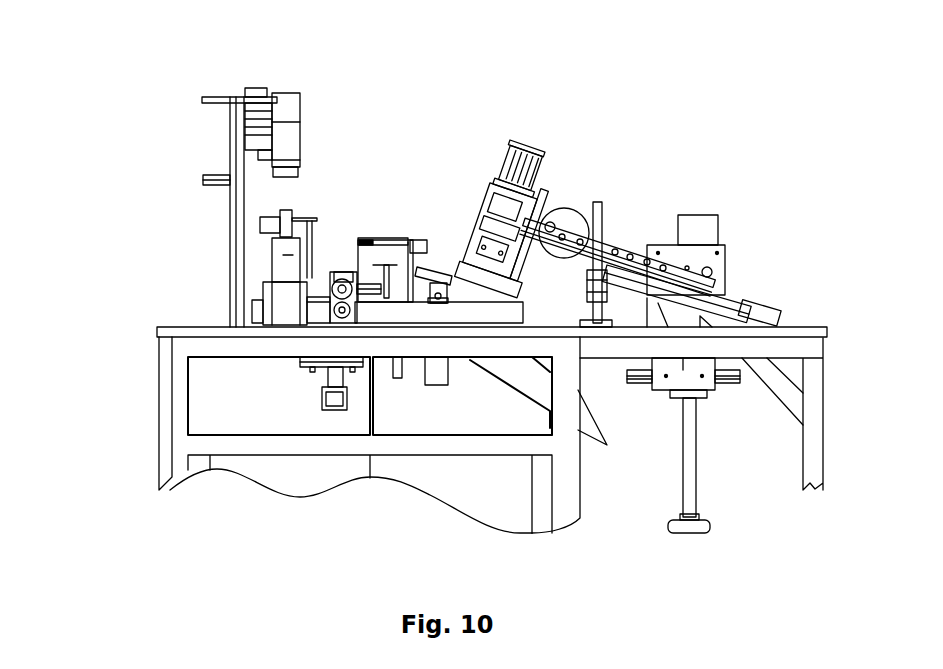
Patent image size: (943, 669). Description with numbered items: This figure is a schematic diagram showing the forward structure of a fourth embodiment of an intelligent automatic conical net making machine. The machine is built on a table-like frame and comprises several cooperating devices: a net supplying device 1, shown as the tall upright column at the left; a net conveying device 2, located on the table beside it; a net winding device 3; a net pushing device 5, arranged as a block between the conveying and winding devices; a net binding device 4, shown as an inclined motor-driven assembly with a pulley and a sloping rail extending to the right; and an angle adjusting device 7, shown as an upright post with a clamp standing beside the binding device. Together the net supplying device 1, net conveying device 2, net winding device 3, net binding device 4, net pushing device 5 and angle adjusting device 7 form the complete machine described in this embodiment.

The net supplying device 1 is at (236, 160).
The net conveying device 2 is at (353, 273).
The net winding device 3 is at (433, 265).
The net binding device 4 is at (553, 210).
The net pushing device 5 is at (420, 240).
The angle adjusting device 7 is at (603, 225).